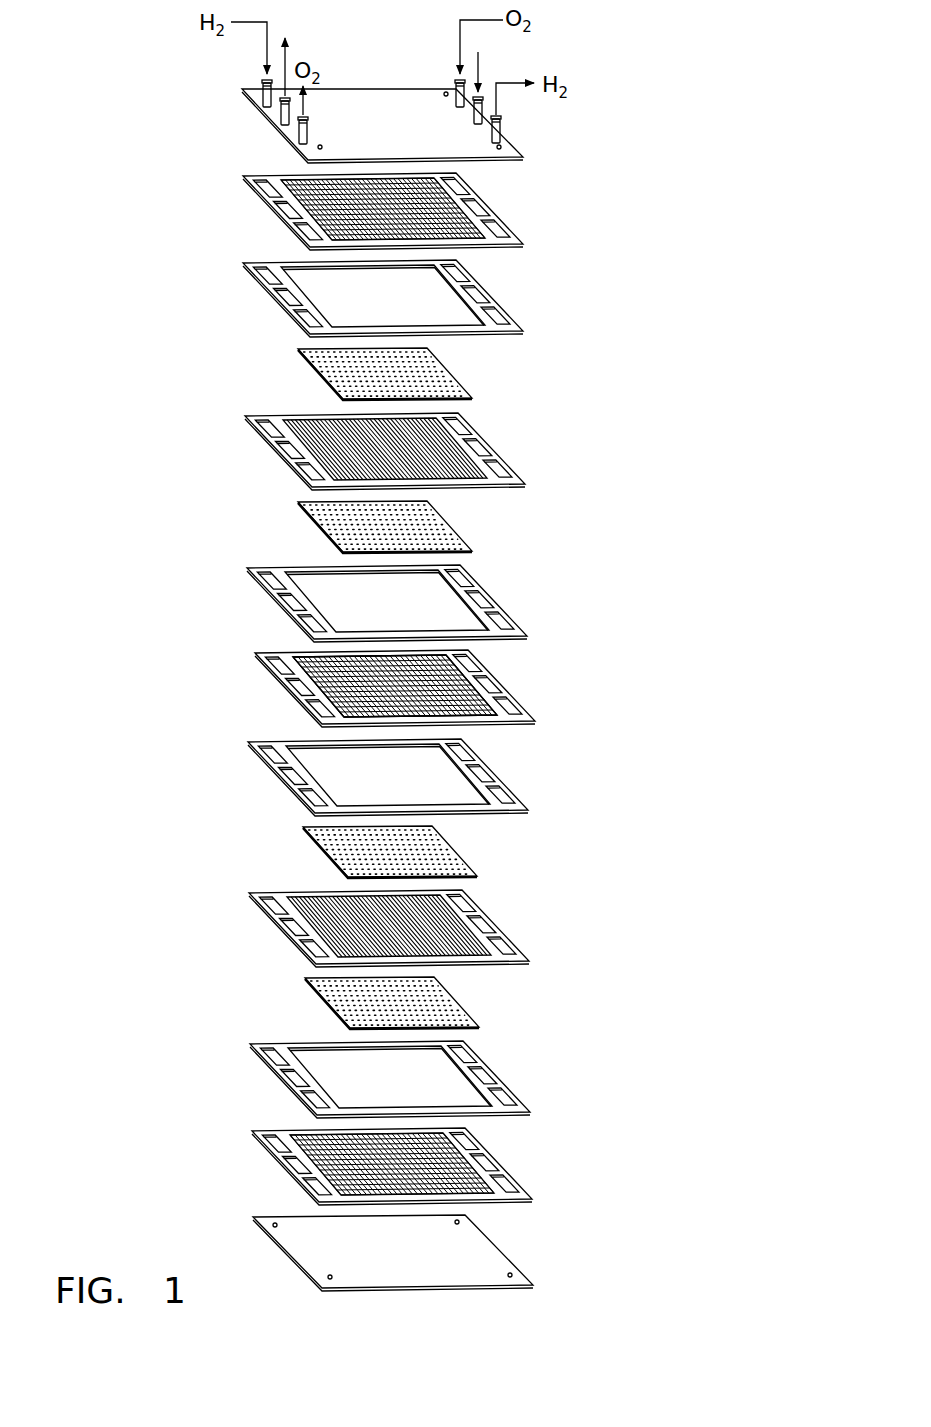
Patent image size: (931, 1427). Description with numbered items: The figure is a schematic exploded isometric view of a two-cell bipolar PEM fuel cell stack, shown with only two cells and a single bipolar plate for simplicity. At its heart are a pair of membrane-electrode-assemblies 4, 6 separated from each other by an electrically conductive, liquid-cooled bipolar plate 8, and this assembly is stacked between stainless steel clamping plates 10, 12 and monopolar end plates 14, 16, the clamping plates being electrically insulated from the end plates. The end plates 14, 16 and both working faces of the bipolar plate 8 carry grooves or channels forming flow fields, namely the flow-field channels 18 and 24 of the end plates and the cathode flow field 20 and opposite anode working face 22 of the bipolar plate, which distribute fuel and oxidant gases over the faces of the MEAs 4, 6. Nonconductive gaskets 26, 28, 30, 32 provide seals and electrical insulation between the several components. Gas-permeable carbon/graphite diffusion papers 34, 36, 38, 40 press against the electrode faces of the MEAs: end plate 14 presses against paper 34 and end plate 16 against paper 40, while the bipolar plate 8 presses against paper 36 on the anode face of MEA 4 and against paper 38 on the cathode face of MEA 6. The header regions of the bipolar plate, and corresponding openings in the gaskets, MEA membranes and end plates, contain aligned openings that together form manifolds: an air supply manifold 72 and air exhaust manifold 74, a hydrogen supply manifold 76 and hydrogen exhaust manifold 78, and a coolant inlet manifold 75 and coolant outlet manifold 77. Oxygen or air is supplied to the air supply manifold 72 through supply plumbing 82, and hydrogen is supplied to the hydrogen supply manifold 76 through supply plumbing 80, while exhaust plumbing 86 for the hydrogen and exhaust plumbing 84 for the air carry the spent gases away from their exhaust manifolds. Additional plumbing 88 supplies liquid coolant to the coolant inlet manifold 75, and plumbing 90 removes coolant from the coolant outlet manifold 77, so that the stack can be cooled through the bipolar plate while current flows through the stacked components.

The clamping plate 10 is at (262, 127).
The clamping plate 12 is at (498, 1255).
The monopolar end plate 14 is at (340, 216).
The monopolar end plate 16 is at (425, 1161).
The flow-field channels 18 is at (305, 222).
The cathode flow field 20 is at (460, 700).
The anode working face 22 is at (323, 695).
The flow-field channels 24 is at (478, 1187).
The nonconductive gasket 26 is at (283, 278).
The nonconductive gasket 28 is at (283, 600).
The nonconductive gasket 30 is at (482, 785).
The nonconductive gasket 32 is at (483, 1083).
The carbon/graphite diffusion paper 34 is at (332, 366).
The carbon/graphite diffusion paper 36 is at (333, 518).
The carbon/graphite diffusion paper 38 is at (443, 855).
The carbon/graphite diffusion paper 40 is at (437, 1007).
The membrane-electrode-assembly 4 is at (270, 447).
The membrane-electrode-assembly 6 is at (490, 915).
The bipolar plate 8 is at (401, 675).
The air supply manifold openings 72 is at (277, 663).
The air exhaust manifold openings 74 is at (507, 708).
The coolant inlet manifold openings 75 is at (478, 680).
The hydrogen supply manifold openings 76 is at (467, 663).
The coolant outlet manifold openings 77 is at (303, 685).
The hydrogen exhaust manifold openings 78 is at (320, 712).
The hydrogen supply plumbing 80 is at (455, 88).
The air supply plumbing 82 is at (263, 84).
The air exhaust plumbing 84 is at (500, 128).
The hydrogen exhaust plumbing 86 is at (299, 133).
The coolant supply plumbing 88 is at (483, 102).
The coolant removal plumbing 90 is at (281, 113).